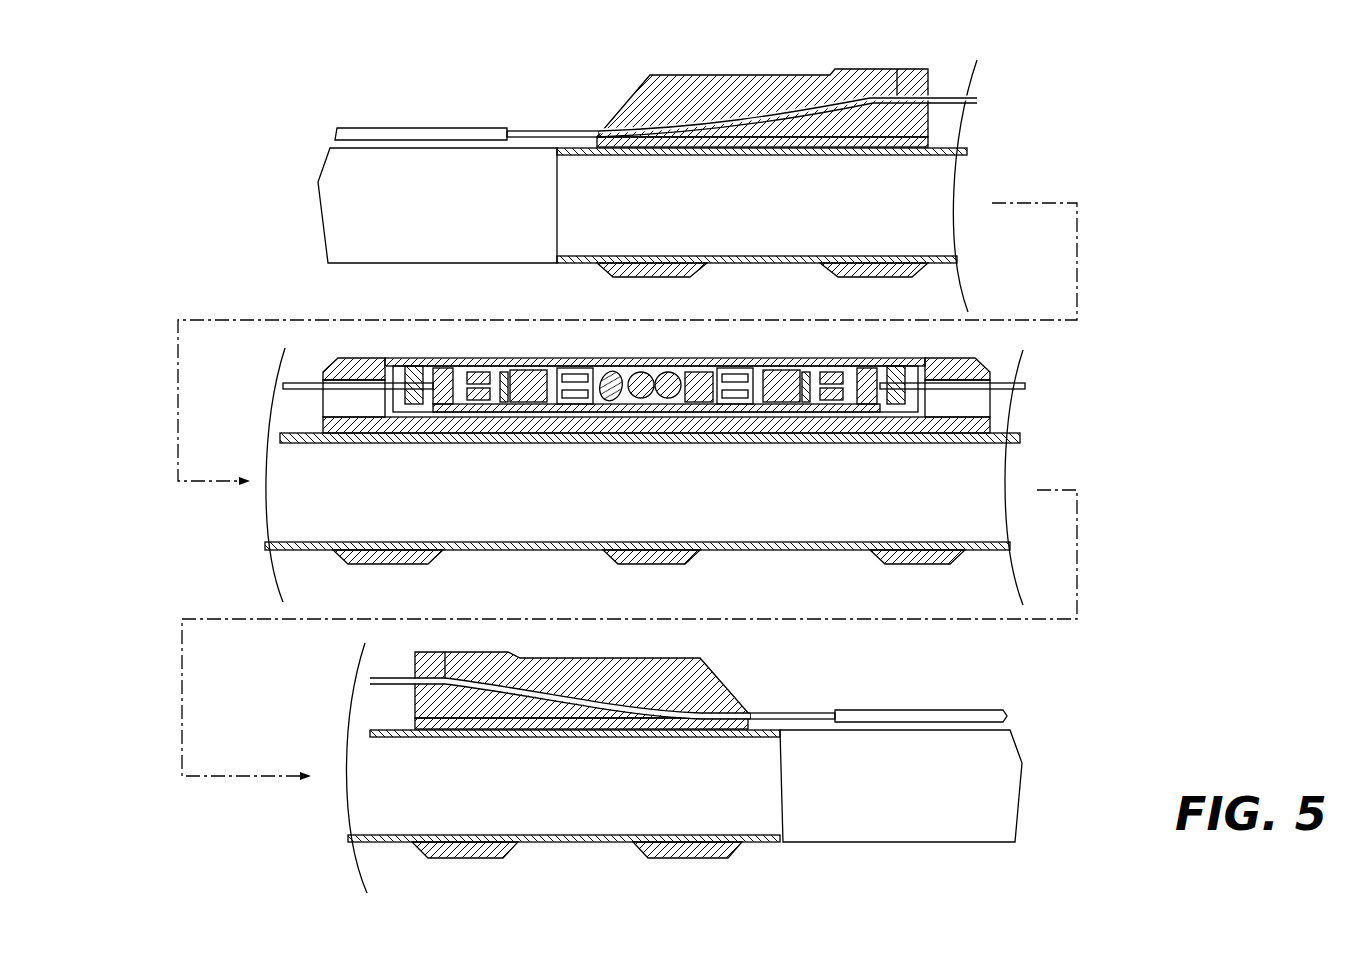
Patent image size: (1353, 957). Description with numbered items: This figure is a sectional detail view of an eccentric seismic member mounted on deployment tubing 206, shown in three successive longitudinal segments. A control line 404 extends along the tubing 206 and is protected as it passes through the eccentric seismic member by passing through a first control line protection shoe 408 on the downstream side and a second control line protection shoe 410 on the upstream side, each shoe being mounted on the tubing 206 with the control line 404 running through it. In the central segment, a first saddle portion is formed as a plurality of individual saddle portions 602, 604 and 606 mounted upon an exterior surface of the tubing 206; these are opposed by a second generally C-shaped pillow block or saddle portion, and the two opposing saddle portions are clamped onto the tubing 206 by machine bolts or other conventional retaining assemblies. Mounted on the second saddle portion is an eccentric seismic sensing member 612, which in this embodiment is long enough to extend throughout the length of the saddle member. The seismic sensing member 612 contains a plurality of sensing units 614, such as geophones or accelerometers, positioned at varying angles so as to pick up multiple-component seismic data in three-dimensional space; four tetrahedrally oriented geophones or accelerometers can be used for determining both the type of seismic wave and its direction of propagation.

The tubing 206 is at (833, 153).
The control line 404 is at (530, 131).
The first control line protection shoe 408 is at (681, 69).
The second control line protection shoe 410 is at (722, 672).
The saddle portion 602 is at (423, 562).
The saddle portion 604 is at (690, 563).
The saddle portion 606 is at (922, 564).
The eccentric seismic sensing member 612 is at (696, 354).
The sensing units 614 is at (668, 360).